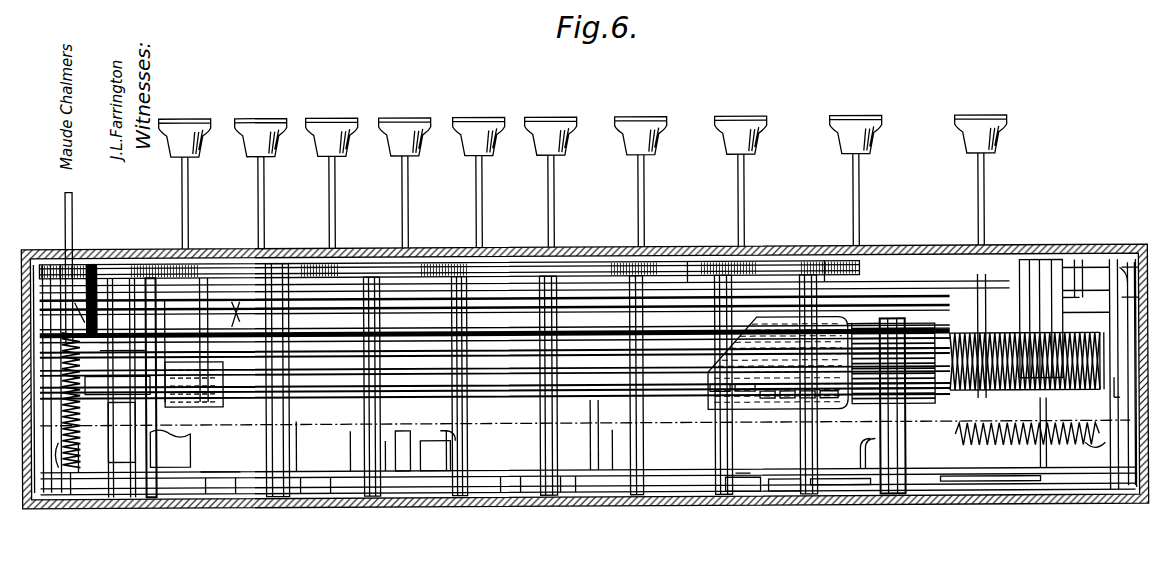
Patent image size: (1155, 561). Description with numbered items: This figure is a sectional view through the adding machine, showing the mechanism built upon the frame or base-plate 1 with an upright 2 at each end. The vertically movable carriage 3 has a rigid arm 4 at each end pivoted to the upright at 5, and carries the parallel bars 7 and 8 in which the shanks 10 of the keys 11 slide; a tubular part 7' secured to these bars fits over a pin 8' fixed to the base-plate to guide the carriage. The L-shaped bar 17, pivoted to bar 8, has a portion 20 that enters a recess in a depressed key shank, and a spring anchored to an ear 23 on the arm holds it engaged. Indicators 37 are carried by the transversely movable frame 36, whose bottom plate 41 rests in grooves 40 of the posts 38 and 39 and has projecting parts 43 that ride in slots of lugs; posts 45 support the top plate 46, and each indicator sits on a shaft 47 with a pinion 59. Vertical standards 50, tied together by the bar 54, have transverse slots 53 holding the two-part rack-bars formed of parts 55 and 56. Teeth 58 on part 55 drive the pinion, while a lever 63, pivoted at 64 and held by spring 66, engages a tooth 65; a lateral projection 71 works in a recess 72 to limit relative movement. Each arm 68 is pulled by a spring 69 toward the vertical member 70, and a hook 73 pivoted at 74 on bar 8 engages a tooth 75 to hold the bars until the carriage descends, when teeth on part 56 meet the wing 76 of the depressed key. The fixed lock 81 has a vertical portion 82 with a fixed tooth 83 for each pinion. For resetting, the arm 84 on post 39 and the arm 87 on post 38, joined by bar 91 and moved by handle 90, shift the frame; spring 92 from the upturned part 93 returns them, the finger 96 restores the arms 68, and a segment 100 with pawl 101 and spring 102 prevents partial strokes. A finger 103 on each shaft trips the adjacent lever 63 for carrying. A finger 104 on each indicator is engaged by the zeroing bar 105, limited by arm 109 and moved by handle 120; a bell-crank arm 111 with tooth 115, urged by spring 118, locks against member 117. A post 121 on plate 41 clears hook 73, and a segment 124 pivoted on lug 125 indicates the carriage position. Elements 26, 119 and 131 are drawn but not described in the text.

The frame or base-plate 1 is at (1128, 503).
The upright 2 is at (33, 490).
The vertically movable carriage 3 is at (1099, 257).
The rigid arm 4 is at (1135, 268).
The pivot 5 is at (38, 258).
The bar 7 is at (83, 360).
The tubular part 7' is at (577, 431).
The bar 8 is at (116, 354).
The pin 8' is at (580, 435).
The key shank 10 is at (403, 177).
The key 11 is at (498, 150).
The bar 17 is at (170, 258).
The portion of bar 20 is at (1083, 268).
The ear 23 is at (1128, 275).
The guide 26 is at (198, 345).
The transversely movable frame 36 is at (356, 256).
The indicator 37 is at (430, 256).
The post 38 is at (213, 477).
The post 39 is at (913, 453).
The groove or recess 40 is at (272, 480).
The bottom plate 41 is at (672, 472).
The projecting part 43 is at (83, 470).
The post 45 is at (123, 463).
The top plate 46 is at (688, 256).
The shaft 47 is at (700, 300).
The vertical standard 50 is at (392, 450).
The transverse slot or groove 53 is at (372, 435).
The bar 54 is at (612, 258).
The bar part 55 is at (485, 320).
The bar part 56 is at (565, 320).
The teeth 58 is at (684, 392).
The pinion 59 is at (365, 340).
The lever 63 is at (435, 436).
The pivot 64 is at (399, 436).
The tooth 65 is at (300, 425).
The spring 66 is at (530, 392).
The arm 68 is at (890, 340).
The spring 69 is at (995, 392).
The vertical member 70 is at (1100, 392).
The lateral projection 71 is at (885, 330).
The recess 72 is at (852, 322).
The hook 73 is at (195, 415).
The pivot 74 is at (78, 440).
The tooth 75 is at (215, 330).
The wing or stop 76 is at (863, 313).
The fixed lock 81 is at (873, 317).
The vertical portion 82 is at (775, 420).
The fixed tooth 83 is at (740, 394).
The arm 84 is at (987, 480).
The arm 87 is at (330, 485).
The handle 90 is at (450, 432).
The bar 91 is at (537, 492).
The spring 92 is at (976, 440).
The upturned part 93 is at (870, 455).
The finger 96 is at (1042, 410).
The segment 100 is at (847, 480).
The pawl 101 is at (747, 478).
The spring 102 is at (787, 482).
The finger 103 is at (358, 430).
The finger 104 is at (282, 262).
The bar 105 is at (994, 293).
The laterally projecting arm 109 is at (228, 258).
The bell-crank arm 111 is at (105, 330).
The tooth 115 is at (1083, 299).
The member 117 is at (78, 477).
The spring 118 is at (70, 445).
The block 119 is at (117, 385).
The handle 120 is at (75, 208).
The post 121 is at (174, 464).
The segment 124 is at (615, 440).
The lug 125 is at (567, 480).
The pin 131 is at (826, 256).